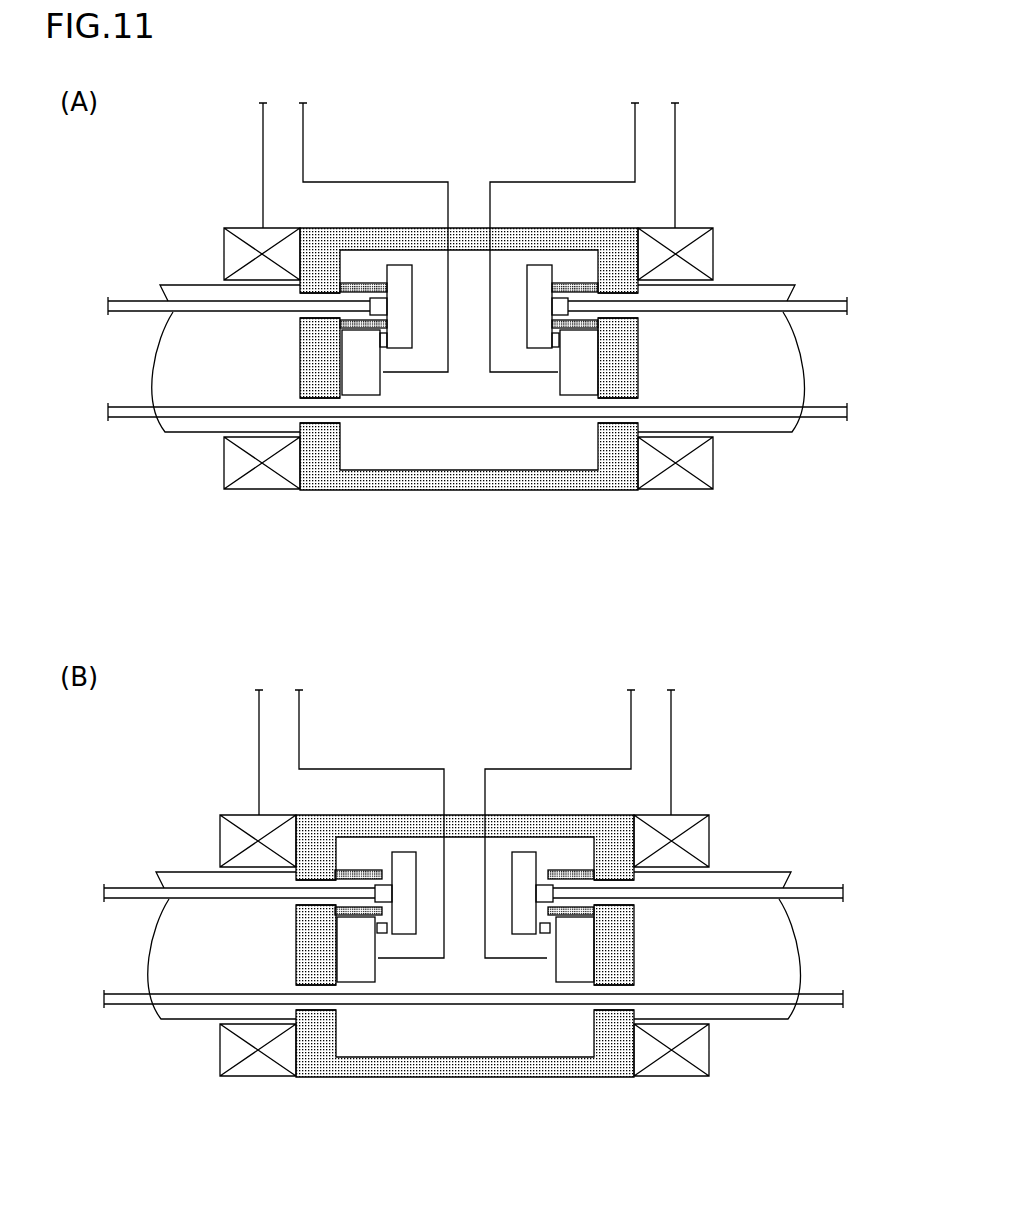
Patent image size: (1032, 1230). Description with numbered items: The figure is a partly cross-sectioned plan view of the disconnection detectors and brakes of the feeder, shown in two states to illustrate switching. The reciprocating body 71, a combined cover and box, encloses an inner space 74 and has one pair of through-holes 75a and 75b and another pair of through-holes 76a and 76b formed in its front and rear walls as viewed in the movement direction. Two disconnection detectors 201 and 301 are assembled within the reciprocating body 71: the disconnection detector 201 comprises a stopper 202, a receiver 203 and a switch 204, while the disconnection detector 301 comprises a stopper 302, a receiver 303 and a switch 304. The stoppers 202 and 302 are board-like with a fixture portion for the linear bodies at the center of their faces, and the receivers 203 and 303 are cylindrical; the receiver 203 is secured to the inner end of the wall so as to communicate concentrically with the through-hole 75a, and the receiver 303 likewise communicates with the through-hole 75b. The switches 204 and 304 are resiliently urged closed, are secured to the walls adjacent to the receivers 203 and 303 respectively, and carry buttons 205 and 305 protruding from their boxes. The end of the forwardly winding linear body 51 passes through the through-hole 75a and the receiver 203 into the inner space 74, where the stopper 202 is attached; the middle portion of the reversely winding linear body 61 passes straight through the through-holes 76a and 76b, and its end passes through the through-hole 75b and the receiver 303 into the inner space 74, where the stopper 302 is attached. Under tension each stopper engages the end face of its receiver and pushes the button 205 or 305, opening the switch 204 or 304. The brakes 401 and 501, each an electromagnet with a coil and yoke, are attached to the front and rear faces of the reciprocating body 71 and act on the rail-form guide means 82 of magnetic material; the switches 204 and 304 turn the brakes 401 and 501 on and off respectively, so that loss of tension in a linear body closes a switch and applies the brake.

The reciprocating body 71 is at (466, 506).
The inner space 74 is at (467, 265).
The reversely winding linear body 61 is at (137, 410).
The forwardly winding linear body 51 is at (830, 302).
The guide means 82 is at (770, 291).
The brake 501 is at (250, 483).
The brake 401 is at (688, 483).
The disconnection detector 301 is at (432, 390).
The disconnection detector 201 is at (525, 390).
The stopper 302 is at (403, 532).
The stopper 202 is at (524, 532).
The receiver 303 is at (368, 502).
The receiver 203 is at (559, 502).
The switch 304 is at (365, 385).
The switch 204 is at (580, 380).
The button 305 is at (400, 733).
The button 205 is at (535, 733).
The through-hole 75a is at (598, 517).
The through-hole 75b is at (330, 517).
The through-hole 76a is at (623, 420).
The through-hole 76b is at (323, 420).